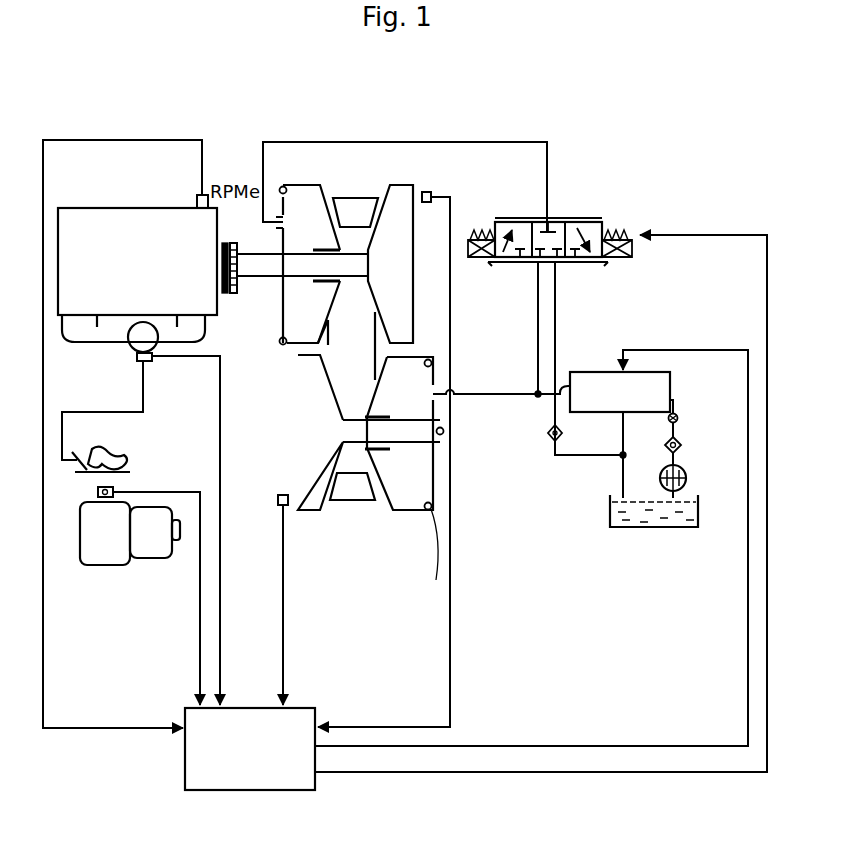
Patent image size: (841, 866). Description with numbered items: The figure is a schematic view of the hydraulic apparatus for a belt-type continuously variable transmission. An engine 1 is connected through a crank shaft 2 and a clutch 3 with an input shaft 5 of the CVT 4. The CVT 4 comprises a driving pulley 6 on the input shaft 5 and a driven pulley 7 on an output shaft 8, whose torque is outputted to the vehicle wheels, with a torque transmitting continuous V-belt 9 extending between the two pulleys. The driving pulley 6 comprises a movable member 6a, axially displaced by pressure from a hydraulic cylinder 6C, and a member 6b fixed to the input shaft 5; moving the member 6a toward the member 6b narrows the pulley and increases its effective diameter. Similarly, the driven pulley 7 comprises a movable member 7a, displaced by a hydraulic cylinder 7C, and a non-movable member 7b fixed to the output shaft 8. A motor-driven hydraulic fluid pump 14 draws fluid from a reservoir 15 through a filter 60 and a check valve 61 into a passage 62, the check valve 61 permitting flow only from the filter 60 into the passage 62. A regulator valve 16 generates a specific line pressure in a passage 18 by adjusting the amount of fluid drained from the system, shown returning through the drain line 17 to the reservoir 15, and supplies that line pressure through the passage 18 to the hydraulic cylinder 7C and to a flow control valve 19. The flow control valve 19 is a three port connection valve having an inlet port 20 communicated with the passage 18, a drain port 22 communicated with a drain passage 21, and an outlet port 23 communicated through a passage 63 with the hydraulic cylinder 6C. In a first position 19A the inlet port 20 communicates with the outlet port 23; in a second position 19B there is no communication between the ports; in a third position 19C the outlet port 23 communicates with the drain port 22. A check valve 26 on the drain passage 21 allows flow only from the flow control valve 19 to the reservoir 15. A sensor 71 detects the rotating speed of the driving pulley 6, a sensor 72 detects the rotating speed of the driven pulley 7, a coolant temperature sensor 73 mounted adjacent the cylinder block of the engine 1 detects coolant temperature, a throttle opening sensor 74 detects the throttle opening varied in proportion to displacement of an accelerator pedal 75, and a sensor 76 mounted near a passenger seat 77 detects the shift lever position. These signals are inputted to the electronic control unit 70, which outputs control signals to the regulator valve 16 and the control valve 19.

The engine 1 is at (121, 237).
The crank shaft 2 is at (228, 292).
The clutch 3 is at (239, 248).
The CVT 4 is at (362, 548).
The input shaft 5 is at (252, 270).
The driving pulley 6 is at (342, 239).
The movable member 6a is at (330, 222).
The fixed member 6b is at (380, 225).
The hydraulic cylinder 6C is at (281, 186).
The driven pulley 7 is at (374, 475).
The movable member 7a is at (380, 475).
The non-movable member 7b is at (312, 470).
The hydraulic cylinder 7C is at (406, 378).
The output shaft 8 is at (412, 440).
The V-belt 9 is at (352, 212).
The hydraulic fluid pump 14 is at (687, 480).
The reservoir 15 is at (699, 515).
The regulator valve 16 is at (672, 374).
The drain line 17 is at (620, 432).
The passage 18 is at (562, 392).
The flow control valve 19 is at (574, 207).
The first position 19A is at (503, 228).
The second position 19B is at (552, 236).
The third position 19C is at (593, 230).
The inlet port 20 is at (539, 264).
The drain passage 21 is at (557, 315).
The drain port 22 is at (556, 264).
The outlet port 23 is at (546, 220).
The check valve 26 is at (548, 432).
The filter 60 is at (682, 446).
The check valve 61 is at (678, 418).
The passage 62 is at (675, 401).
The passage 63 is at (413, 142).
The electronic control unit 70 is at (262, 783).
The sensor 71 is at (427, 204).
The sensor 72 is at (278, 500).
The coolant temperature sensor 73 is at (197, 200).
The throttle opening sensor 74 is at (135, 358).
The accelerator pedal 75 is at (95, 450).
The sensor 76 is at (98, 492).
The passenger seat 77 is at (108, 552).